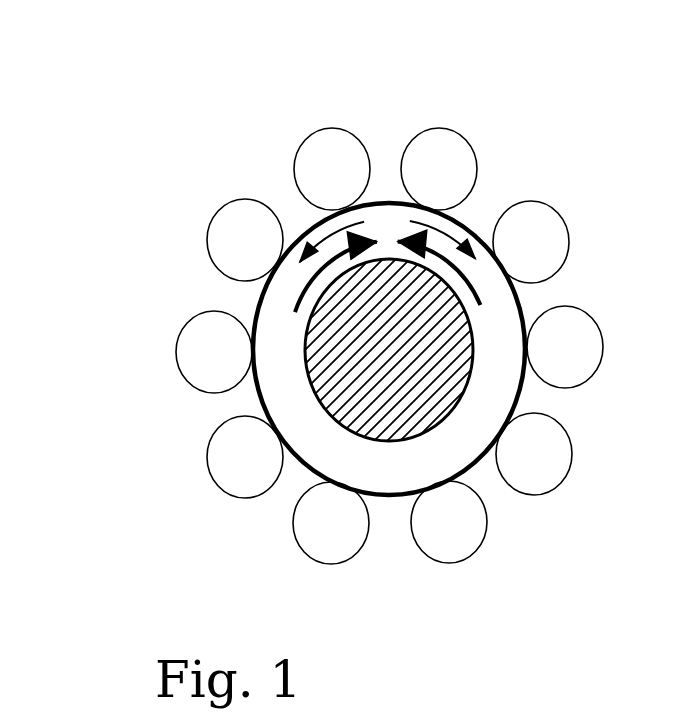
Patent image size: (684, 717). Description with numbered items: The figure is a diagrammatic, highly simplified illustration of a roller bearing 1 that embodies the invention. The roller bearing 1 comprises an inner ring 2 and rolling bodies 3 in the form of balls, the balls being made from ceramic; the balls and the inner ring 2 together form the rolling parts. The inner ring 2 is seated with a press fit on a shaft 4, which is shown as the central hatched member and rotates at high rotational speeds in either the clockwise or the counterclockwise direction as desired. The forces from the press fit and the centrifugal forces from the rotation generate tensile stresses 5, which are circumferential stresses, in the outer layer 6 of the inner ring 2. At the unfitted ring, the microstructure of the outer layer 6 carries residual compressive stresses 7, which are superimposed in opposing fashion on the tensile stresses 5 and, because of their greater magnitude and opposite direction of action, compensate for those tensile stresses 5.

The roller bearing 1 is at (580, 130).
The inner ring 2 is at (503, 390).
The rolling bodies 3 is at (331, 137).
The shaft 4 is at (477, 335).
The tensile stresses 5 is at (362, 223).
The outer layer 6 is at (300, 228).
The residual compressive stresses 7 is at (400, 237).